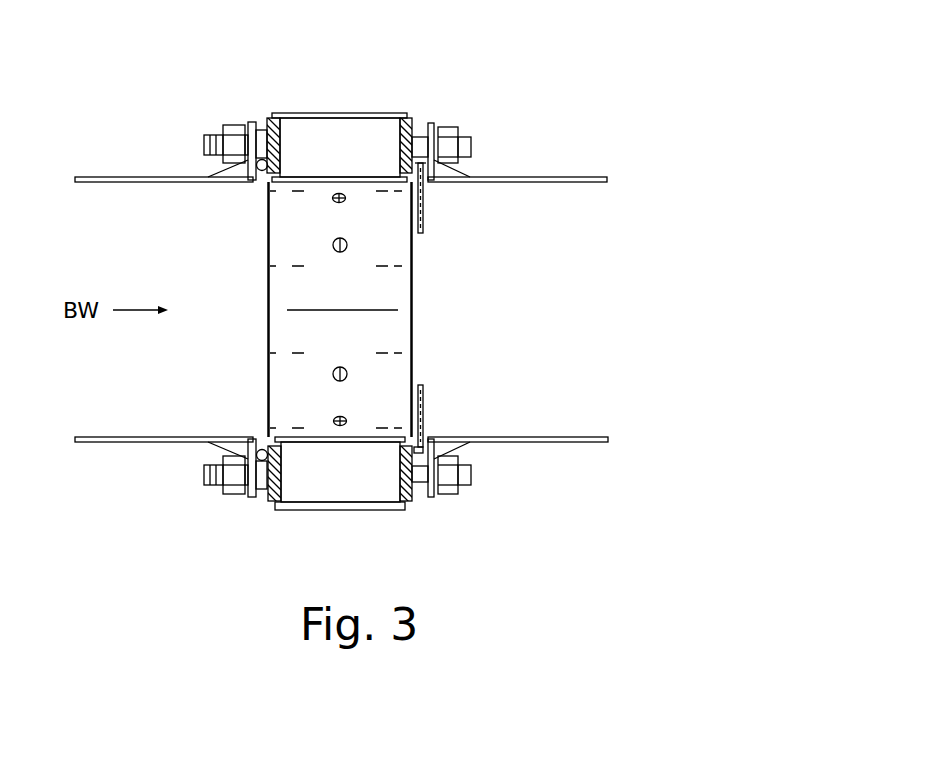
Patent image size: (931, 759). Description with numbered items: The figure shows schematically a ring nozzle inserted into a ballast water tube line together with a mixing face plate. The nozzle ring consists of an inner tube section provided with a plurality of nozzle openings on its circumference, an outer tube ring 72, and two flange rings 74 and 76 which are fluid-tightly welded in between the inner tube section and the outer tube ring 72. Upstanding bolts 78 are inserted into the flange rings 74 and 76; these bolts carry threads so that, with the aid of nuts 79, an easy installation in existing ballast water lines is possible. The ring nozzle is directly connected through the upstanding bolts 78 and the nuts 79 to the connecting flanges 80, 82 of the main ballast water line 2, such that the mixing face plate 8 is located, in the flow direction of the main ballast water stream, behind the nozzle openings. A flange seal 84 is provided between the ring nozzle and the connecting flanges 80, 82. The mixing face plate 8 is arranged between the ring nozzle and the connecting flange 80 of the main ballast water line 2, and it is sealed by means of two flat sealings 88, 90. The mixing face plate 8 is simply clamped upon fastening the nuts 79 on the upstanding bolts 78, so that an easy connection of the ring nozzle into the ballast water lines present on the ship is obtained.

The main ballast water line 2 is at (578, 443).
The mixing face plate 8 is at (423, 220).
The outer tube ring 72 is at (318, 512).
The flange ring 74 is at (277, 112).
The flange ring 76 is at (407, 112).
The upstanding bolts 78 is at (210, 134).
The nuts 79 is at (462, 140).
The connecting flange 80 is at (432, 495).
The connecting flange 82 is at (252, 495).
The flange seal 84 is at (248, 122).
The flat sealing 88 is at (419, 457).
The flat sealing 90 is at (424, 447).